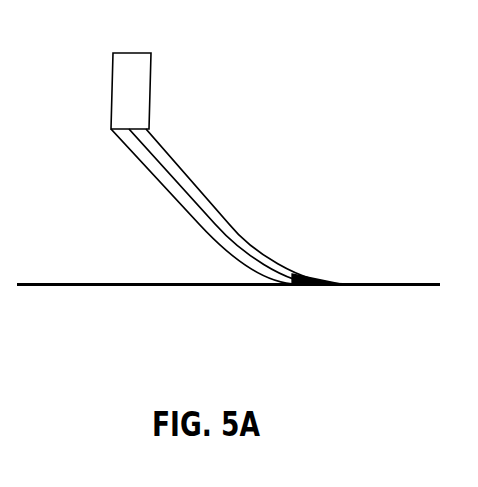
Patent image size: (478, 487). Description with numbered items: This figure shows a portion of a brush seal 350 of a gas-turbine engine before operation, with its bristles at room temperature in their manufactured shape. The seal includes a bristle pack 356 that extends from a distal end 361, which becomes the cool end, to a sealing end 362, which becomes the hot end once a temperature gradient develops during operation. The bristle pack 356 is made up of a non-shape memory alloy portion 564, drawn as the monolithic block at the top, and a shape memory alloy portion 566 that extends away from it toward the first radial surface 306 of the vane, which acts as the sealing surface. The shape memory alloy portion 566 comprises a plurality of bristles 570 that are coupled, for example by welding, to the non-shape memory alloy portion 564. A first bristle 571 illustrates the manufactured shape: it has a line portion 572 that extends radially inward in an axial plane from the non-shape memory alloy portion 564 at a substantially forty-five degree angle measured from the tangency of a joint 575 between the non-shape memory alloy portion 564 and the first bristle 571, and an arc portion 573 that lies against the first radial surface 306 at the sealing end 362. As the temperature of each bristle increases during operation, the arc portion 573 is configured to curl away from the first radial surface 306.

The first radial surface 306 is at (18, 284).
The brush seal 350 is at (303, 67).
The bristle pack 356 is at (158, 204).
The distal end 361 is at (147, 129).
The sealing end 362 is at (345, 284).
The non-shape memory alloy portion 564 is at (140, 114).
The shape memory alloy portion 566 is at (214, 175).
The plurality of bristles 570 is at (213, 222).
The first bristle 571 is at (230, 226).
The line portion 572 is at (175, 158).
The arc portion 573 is at (286, 268).
The joint 575 is at (147, 129).